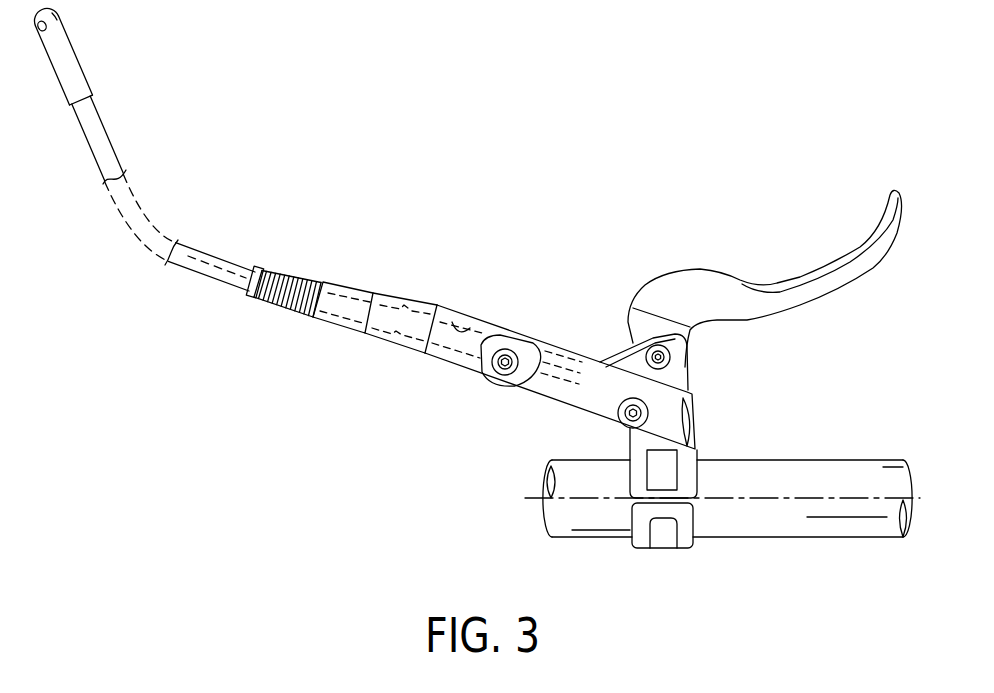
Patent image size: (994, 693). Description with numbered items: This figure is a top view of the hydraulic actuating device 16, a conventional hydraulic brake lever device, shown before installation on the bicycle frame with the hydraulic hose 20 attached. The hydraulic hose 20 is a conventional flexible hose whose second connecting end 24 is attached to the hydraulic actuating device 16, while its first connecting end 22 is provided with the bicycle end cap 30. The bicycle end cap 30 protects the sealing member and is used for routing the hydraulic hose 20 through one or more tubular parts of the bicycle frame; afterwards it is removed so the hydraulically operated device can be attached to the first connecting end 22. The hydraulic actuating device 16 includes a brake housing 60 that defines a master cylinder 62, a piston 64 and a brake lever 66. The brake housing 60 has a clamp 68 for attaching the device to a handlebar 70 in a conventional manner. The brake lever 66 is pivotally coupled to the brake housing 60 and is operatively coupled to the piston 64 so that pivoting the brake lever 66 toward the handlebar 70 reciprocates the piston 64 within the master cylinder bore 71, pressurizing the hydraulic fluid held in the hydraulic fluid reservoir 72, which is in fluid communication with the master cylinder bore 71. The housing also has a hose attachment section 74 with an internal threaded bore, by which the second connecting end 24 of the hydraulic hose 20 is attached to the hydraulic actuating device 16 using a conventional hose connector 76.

The hydraulic actuating device 16 is at (663, 320).
The hydraulic hose 20 is at (118, 148).
The first connecting end 22 is at (93, 122).
The second connecting end 24 is at (216, 286).
The bicycle end cap 30 is at (80, 49).
The brake housing 60 is at (447, 376).
The master cylinder 62 is at (445, 303).
The piston 64 is at (530, 350).
The brake lever 66 is at (813, 295).
The clamp 68 is at (683, 537).
The handlebar 70 is at (784, 458).
The master cylinder bore 71 is at (424, 296).
The hydraulic fluid reservoir 72 is at (562, 393).
The hose attachment section 74 is at (376, 341).
The hose connector 76 is at (347, 282).